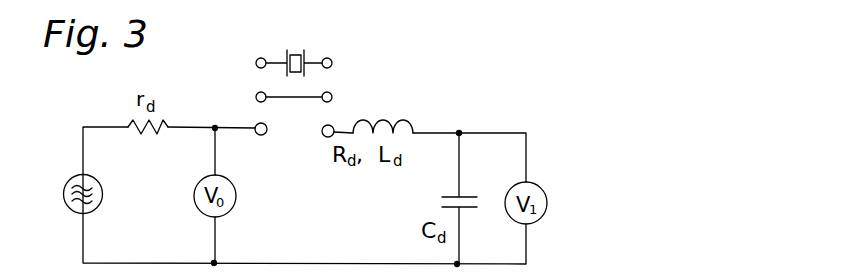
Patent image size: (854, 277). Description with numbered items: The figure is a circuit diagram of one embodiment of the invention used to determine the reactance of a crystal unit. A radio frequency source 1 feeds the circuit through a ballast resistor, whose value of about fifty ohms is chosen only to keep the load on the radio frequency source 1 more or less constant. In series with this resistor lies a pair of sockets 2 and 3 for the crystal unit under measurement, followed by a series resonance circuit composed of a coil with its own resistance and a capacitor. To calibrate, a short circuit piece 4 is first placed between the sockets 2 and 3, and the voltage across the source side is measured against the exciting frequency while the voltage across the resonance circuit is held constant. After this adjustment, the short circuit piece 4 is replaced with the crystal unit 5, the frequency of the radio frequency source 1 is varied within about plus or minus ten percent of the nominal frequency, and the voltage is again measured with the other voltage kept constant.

The radio frequency source 1 is at (102, 200).
The socket 2 is at (264, 135).
The socket 3 is at (324, 137).
The short circuit piece 4 is at (290, 98).
The crystal unit 5 is at (272, 58).